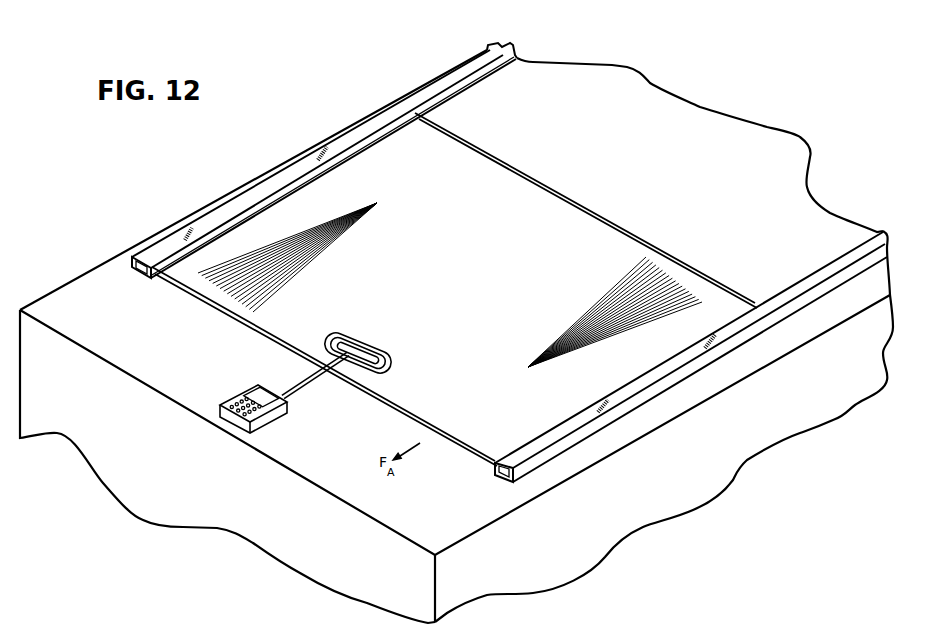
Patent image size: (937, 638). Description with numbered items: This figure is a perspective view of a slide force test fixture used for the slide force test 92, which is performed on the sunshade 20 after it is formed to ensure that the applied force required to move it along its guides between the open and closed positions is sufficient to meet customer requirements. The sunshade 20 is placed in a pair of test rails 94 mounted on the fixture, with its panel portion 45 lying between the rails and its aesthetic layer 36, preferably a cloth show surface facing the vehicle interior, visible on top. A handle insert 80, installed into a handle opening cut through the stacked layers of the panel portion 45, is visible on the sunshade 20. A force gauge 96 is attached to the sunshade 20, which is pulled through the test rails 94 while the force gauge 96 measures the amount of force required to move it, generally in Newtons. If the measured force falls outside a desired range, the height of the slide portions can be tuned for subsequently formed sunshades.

The sunshade 20 is at (516, 156).
The aesthetic layer 36 is at (452, 222).
The panel portion 45 is at (563, 223).
The handle insert 80 is at (347, 340).
The slide force test 92 is at (463, 515).
The test rails 94 is at (485, 58).
The force gauge 96 is at (270, 415).